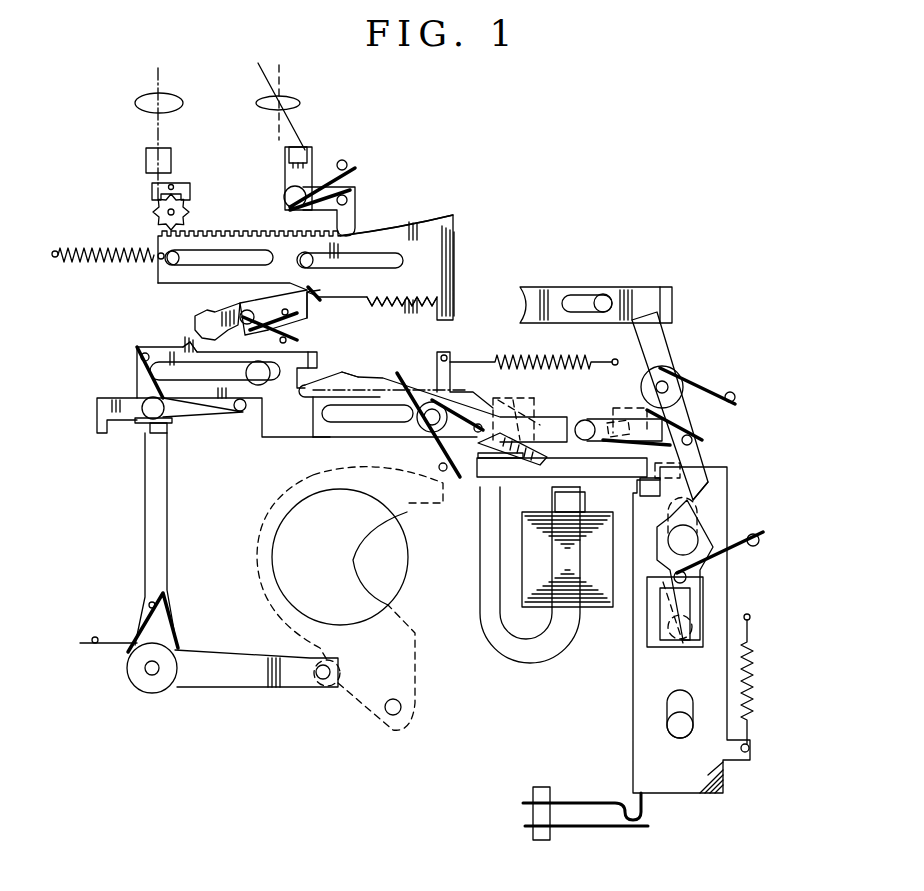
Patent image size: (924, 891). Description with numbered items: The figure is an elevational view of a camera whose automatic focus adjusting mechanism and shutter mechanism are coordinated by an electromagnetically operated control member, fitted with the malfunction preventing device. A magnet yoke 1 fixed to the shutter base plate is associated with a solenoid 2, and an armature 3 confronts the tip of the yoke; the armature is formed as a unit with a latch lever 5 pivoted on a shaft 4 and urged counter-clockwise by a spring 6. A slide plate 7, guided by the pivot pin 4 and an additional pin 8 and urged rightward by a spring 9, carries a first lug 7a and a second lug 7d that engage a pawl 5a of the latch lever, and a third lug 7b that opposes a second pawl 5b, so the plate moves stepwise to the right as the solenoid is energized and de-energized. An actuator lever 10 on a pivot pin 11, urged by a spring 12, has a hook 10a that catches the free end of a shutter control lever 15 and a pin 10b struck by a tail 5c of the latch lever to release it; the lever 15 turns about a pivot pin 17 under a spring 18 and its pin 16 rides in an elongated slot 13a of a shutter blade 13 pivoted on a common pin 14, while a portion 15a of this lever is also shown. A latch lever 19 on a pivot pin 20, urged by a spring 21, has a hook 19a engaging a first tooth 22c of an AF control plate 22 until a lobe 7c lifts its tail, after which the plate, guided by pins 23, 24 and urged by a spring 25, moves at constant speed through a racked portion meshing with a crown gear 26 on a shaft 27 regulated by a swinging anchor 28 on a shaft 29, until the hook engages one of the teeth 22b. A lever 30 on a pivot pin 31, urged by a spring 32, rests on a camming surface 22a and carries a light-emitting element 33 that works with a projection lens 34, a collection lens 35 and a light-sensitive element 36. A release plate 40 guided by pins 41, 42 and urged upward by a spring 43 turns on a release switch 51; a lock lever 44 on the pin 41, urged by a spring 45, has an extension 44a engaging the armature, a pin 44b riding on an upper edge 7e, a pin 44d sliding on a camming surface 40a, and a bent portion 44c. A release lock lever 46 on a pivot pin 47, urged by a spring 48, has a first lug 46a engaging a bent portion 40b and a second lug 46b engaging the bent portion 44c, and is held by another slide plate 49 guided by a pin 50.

The magnet yoke 1 is at (510, 647).
The solenoid 2 is at (590, 612).
The armature 3 is at (477, 473).
The shaft 4 is at (432, 432).
The latch lever 5 is at (473, 423).
The pawl 5a is at (548, 460).
The second pawl 5b is at (343, 370).
The tail 5c is at (313, 437).
The spring 6 is at (462, 368).
The slide plate 7 is at (350, 398).
The first lug 7a is at (515, 420).
The third lug 7b is at (318, 356).
The lobe 7c is at (185, 343).
The second lug 7d is at (497, 420).
The upper edge 7e is at (540, 420).
The pin 8 is at (260, 378).
The spring 9 is at (507, 358).
The actuator lever 10 is at (193, 413).
The hook 10a is at (98, 437).
The pin 10b is at (243, 413).
The pivot pin 11 is at (168, 423).
The spring 12 is at (222, 412).
The shutter blade 13 is at (413, 647).
The elongated slot 13a is at (327, 690).
The common pin 14 is at (401, 708).
The shutter control lever 15 is at (227, 657).
The drive rod 15a is at (153, 447).
The pin 16 is at (320, 690).
The pivot pin 17 is at (152, 677).
The spring 18 is at (110, 643).
The latch lever 19 is at (205, 320).
The hook 19a is at (308, 318).
The pivot pin 20 is at (250, 315).
The spring 21 is at (272, 300).
The AF control plate 22 is at (322, 261).
The camming surface 22a is at (412, 225).
The teeth 22b is at (425, 300).
The first tooth 22c is at (305, 290).
The pin 23 is at (303, 255).
The pin 24 is at (168, 262).
The spring 25 is at (97, 265).
The crown gear 26 is at (153, 212).
The shaft 27 is at (175, 213).
The swinging anchor 28 is at (191, 191).
The shaft 29 is at (173, 185).
The light projecting element carrier 30 is at (357, 194).
The pivot pin 31 is at (292, 197).
The spring 32 is at (348, 162).
The light-emitting element 33 is at (303, 148).
The projection lens 34 is at (288, 98).
The collection lens 35 is at (143, 99).
The light-sensitive element 36 is at (148, 158).
The release plate 40 is at (680, 628).
The camming surface 40a is at (660, 585).
The bent portion 40b is at (640, 485).
The pin 41 is at (700, 530).
The pin 42 is at (677, 735).
The spring 43 is at (740, 672).
The lock lever 44 is at (690, 505).
The extension 44a is at (657, 505).
The pin 44b is at (590, 422).
The bent portion 44c is at (628, 420).
The pin 44d is at (680, 640).
The spring 45 is at (762, 530).
The release lock lever 46 is at (691, 403).
The first lug 46a is at (700, 468).
The second lug 46b is at (610, 428).
The pivot pin 47 is at (664, 383).
The spring 48 is at (730, 395).
The slide plate 49 is at (640, 288).
The pin 50 is at (605, 295).
The release switch 51 is at (543, 787).